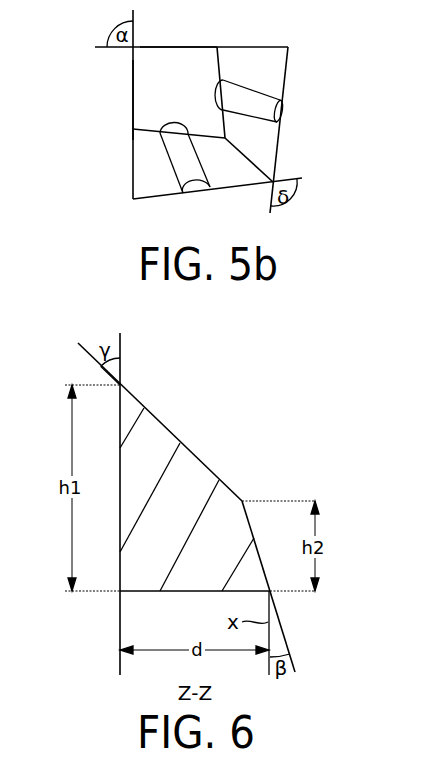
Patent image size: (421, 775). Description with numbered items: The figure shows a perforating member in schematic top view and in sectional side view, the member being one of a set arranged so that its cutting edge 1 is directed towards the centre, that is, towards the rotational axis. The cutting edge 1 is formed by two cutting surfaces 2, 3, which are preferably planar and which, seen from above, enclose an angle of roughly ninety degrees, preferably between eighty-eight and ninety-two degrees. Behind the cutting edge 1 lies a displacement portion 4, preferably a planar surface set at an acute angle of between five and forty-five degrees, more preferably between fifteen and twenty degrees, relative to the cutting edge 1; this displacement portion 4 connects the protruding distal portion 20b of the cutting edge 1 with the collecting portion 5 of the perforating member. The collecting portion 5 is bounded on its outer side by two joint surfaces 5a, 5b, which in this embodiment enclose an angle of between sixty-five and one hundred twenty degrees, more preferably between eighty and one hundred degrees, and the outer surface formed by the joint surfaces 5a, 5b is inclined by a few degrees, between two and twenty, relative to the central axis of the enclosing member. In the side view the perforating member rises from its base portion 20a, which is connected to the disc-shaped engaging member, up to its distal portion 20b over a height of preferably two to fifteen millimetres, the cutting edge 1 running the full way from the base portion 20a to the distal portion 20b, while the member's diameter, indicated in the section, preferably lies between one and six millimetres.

In FIG. 5b, the cutting edge 1 is at (134, 46).
In FIG. 6, the cutting edge 1 is at (119, 424).
In FIG. 5b, the cutting surface 2 is at (173, 46).
In FIG. 5b, the cutting surface 3 is at (132, 100).
In FIG. 5b, the displacement portion 4 is at (206, 62).
In FIG. 6, the displacement portion 4 is at (198, 456).
In FIG. 5b, the collecting portion 5 is at (258, 167).
In FIG. 6, the collecting portion 5 is at (257, 546).
In FIG. 5b, the joint surface 5a is at (232, 182).
In FIG. 5b, the joint surface 5b is at (279, 70).
In FIG. 6, the base portion 20a is at (163, 592).
In FIG. 6, the distal portion 20b is at (122, 384).